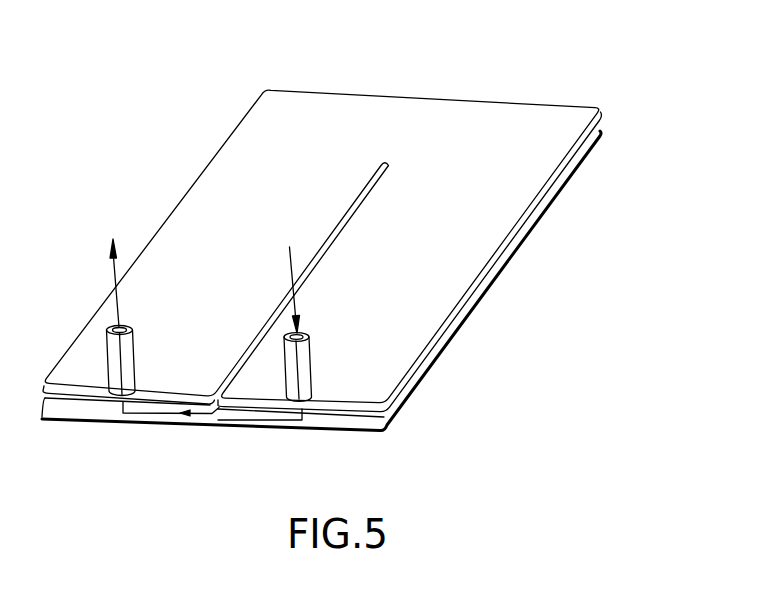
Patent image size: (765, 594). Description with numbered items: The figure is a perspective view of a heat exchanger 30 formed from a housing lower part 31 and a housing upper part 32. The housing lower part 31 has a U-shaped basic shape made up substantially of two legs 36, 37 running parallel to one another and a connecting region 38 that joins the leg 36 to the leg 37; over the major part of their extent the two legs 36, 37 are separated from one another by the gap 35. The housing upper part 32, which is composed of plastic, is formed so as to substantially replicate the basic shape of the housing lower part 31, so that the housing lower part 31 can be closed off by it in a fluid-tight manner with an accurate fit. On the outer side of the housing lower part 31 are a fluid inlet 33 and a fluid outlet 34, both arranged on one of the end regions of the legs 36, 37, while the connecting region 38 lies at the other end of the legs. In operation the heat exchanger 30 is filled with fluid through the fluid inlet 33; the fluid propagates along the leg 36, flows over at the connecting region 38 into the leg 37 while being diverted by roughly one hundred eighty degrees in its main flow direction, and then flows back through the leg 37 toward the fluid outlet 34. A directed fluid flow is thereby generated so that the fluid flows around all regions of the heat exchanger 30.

The heat exchanger 30 is at (331, 242).
The housing lower part 31 is at (322, 215).
The housing upper part 32 is at (558, 193).
The fluid inlet 33 is at (331, 324).
The fluid outlet 34 is at (128, 366).
The gap 35 is at (363, 183).
The leg 36 is at (443, 283).
The leg 37 is at (217, 215).
The connecting region 38 is at (347, 118).